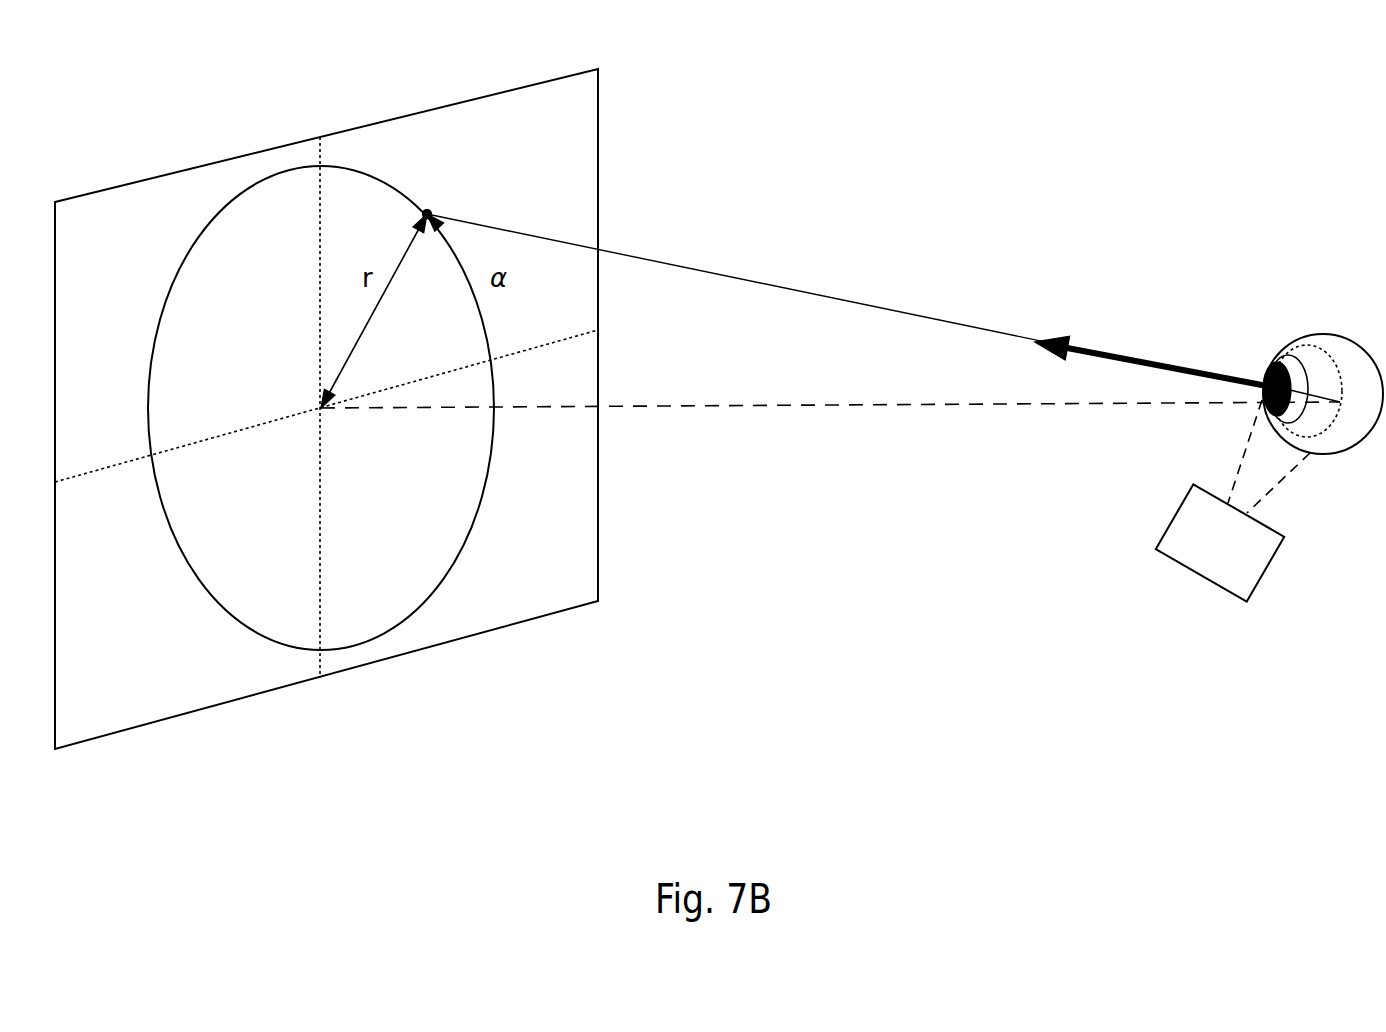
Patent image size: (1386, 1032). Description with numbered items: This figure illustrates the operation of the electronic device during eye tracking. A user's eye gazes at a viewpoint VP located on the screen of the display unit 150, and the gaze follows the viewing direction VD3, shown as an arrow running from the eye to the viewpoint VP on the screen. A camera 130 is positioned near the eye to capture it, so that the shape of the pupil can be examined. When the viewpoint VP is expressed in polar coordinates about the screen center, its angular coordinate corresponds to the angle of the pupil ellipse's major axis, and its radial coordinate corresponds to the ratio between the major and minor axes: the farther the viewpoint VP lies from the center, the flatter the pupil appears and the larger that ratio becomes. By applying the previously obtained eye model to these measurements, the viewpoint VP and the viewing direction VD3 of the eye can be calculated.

The display unit 150 is at (437, 110).
The camera 130 is at (1233, 501).
The viewpoint VP is at (427, 214).
The viewing direction VD3 is at (1170, 360).